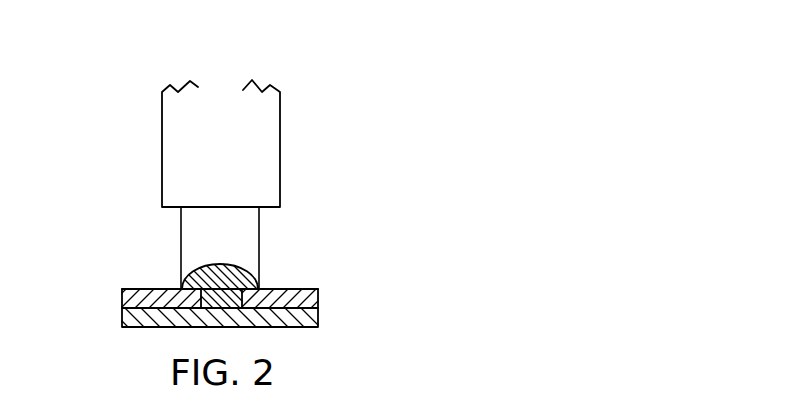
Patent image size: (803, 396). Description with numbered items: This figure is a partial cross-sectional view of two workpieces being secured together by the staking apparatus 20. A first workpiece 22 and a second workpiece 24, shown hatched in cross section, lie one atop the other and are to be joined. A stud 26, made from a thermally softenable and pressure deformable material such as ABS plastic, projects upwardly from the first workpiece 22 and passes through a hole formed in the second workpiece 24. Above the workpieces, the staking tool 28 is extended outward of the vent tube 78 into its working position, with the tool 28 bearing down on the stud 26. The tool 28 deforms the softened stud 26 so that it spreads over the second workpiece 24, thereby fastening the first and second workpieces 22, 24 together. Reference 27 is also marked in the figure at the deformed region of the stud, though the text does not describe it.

The staking apparatus 20 is at (297, 90).
The vent tube 78 is at (279, 166).
The staking tool 28 is at (182, 267).
The stud 26 is at (240, 278).
The solder fillet 27 is at (205, 298).
The second workpiece 24 is at (318, 296).
The first workpiece 22 is at (318, 317).